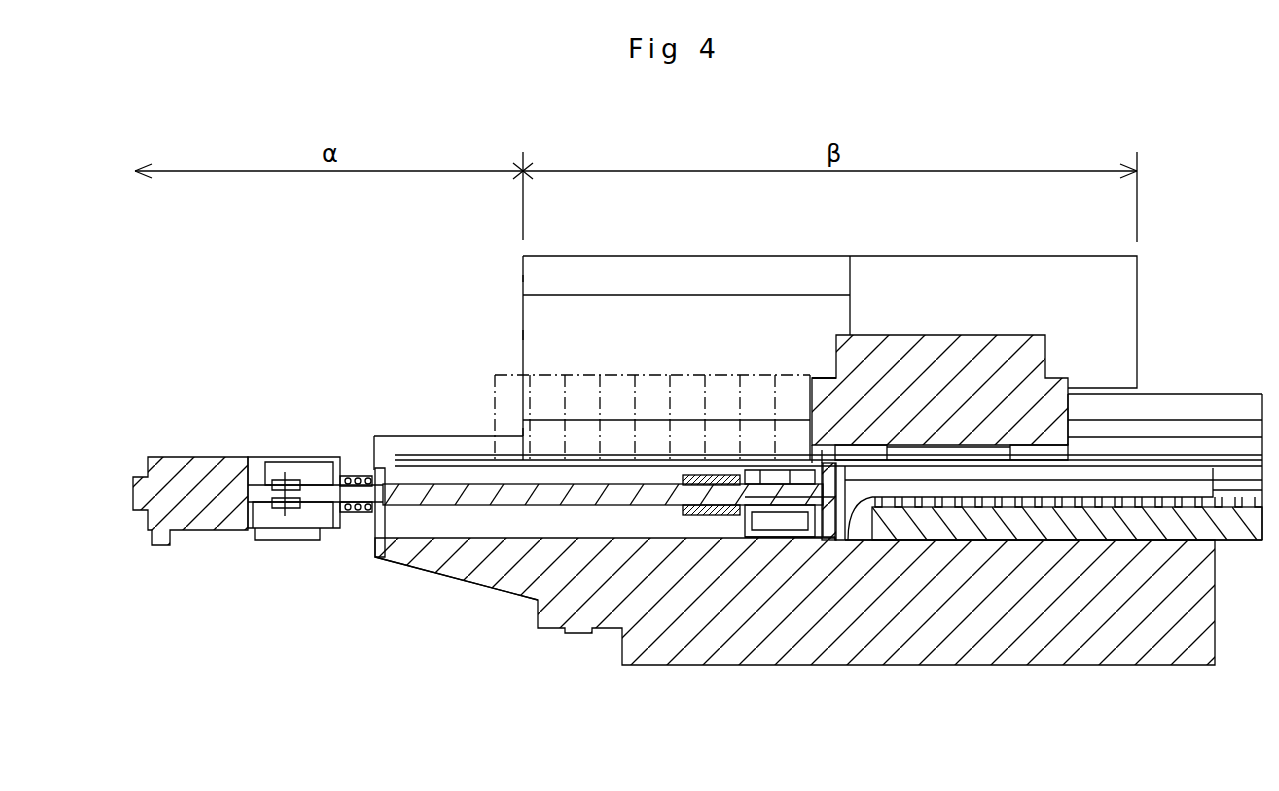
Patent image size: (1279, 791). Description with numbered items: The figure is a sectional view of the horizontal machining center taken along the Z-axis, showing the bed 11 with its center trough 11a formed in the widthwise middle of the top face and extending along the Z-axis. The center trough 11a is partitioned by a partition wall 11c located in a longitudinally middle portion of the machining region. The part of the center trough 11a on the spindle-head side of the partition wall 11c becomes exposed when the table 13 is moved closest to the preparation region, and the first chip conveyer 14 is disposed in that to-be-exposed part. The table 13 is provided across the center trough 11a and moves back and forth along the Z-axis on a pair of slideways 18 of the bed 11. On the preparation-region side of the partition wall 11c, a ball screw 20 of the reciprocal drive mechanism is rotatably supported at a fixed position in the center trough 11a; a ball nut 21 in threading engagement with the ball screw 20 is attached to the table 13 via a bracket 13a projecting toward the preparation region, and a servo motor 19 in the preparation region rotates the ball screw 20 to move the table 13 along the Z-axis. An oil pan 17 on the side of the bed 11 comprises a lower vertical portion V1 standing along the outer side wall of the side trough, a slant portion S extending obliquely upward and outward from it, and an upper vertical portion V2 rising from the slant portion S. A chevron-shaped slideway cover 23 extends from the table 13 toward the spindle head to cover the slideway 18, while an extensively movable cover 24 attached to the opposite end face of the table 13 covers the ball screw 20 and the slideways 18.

The bed 11 is at (975, 655).
The center trough 11a is at (432, 545).
The partition wall 11c is at (818, 545).
The table 13 is at (950, 348).
The bracket 13a is at (745, 460).
The first chip conveyer 14 is at (1237, 525).
The oil pan 17 is at (848, 254).
The slideway 18 is at (410, 434).
The servo motor 19 is at (208, 470).
The ball screw 20 is at (493, 489).
The ball nut 21 is at (690, 513).
The slideway cover 23 is at (1170, 400).
The extensively movable cover 24 is at (625, 375).
The lower vertical portion V1 is at (523, 432).
The upper vertical portion V2 is at (523, 278).
The slant portion S is at (523, 335).